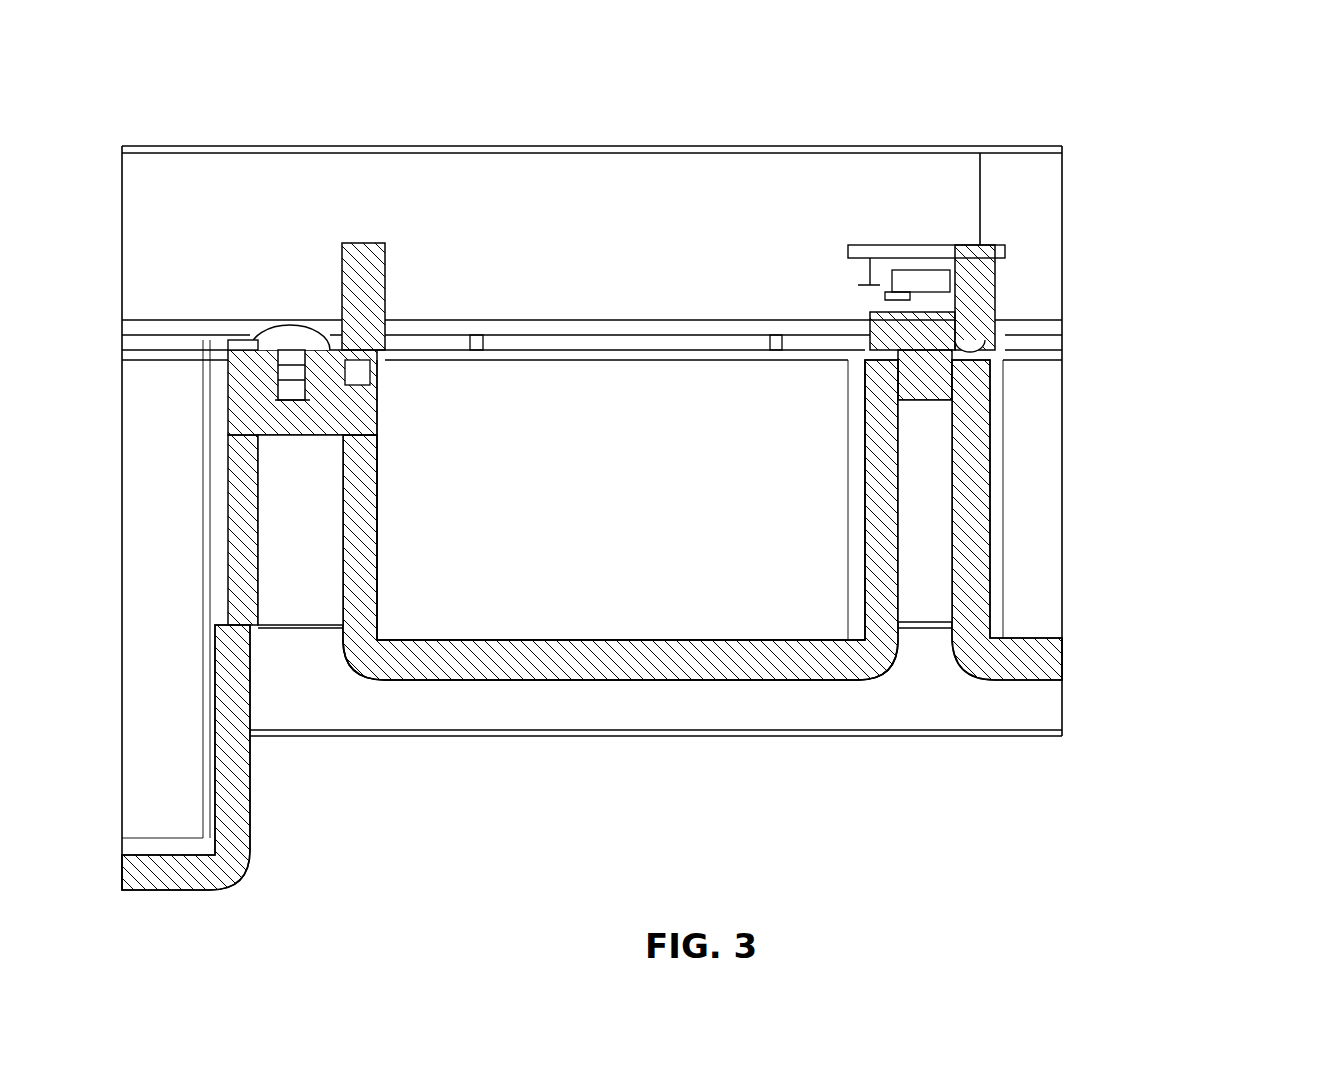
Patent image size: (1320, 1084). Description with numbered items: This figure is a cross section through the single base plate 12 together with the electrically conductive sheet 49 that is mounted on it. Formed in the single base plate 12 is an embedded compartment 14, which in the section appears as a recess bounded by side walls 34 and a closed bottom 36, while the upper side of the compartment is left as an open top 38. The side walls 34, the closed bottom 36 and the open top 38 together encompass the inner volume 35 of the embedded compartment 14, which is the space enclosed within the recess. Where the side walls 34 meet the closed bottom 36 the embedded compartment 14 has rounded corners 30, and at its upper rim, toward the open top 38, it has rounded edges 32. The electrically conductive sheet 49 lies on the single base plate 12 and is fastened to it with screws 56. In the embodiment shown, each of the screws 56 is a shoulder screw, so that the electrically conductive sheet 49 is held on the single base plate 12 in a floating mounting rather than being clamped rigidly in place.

The single base plate 12 is at (915, 383).
The embedded compartment 14 is at (672, 503).
The rounded corners 30 is at (377, 636).
The rounded edges 32 is at (373, 362).
The side walls 34 is at (362, 523).
The inner volume 35 is at (610, 567).
The closed bottom 36 is at (553, 665).
The open top 38 is at (720, 375).
The electrically conductive sheet 49 is at (242, 350).
The screws 56 is at (293, 357).